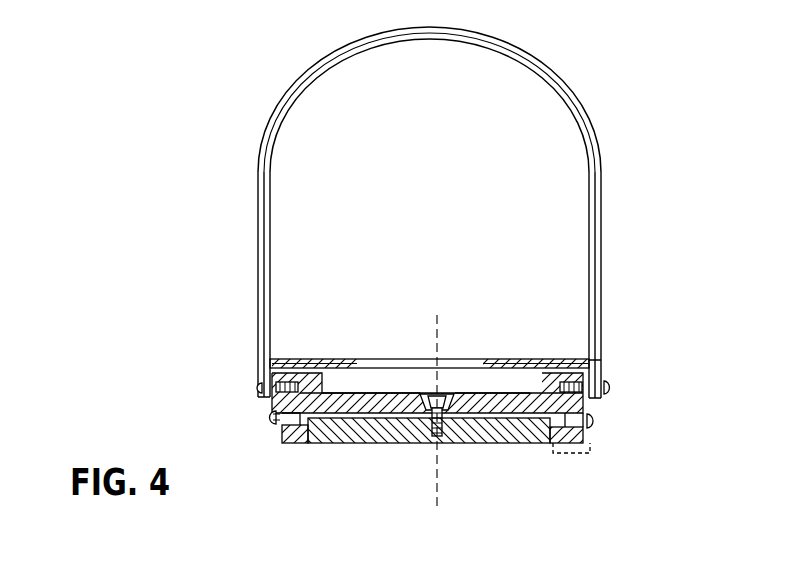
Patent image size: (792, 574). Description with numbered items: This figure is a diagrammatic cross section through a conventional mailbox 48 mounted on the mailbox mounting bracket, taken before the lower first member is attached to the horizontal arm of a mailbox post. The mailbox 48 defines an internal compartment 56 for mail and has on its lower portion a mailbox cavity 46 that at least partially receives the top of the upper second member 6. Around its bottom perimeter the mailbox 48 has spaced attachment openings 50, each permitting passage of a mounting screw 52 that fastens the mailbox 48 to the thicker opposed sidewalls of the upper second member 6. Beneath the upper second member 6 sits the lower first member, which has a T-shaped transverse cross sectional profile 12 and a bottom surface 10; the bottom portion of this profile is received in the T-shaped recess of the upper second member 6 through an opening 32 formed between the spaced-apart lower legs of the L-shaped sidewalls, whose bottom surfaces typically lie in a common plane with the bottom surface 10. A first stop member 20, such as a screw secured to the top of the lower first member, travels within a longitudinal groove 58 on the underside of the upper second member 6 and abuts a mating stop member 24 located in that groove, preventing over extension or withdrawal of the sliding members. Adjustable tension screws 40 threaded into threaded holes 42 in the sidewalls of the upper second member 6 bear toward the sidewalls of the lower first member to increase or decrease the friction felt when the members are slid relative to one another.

The upper second member 6 is at (427, 332).
The bottom surface 10 is at (438, 397).
The T-shaped transverse cross sectional profile 12 is at (372, 440).
The first stop member 20 is at (430, 422).
The mating stop member 24 is at (446, 395).
The opening 32 is at (454, 478).
The adjustable tension screw 40 is at (268, 419).
The threaded hole 42 is at (285, 432).
The mailbox cavity 46 is at (358, 381).
The mailbox 48 is at (600, 187).
The attachment opening 50 is at (598, 378).
The mounting screw 52 is at (258, 388).
The internal compartment 56 is at (438, 208).
The longitudinal groove 58 is at (427, 398).